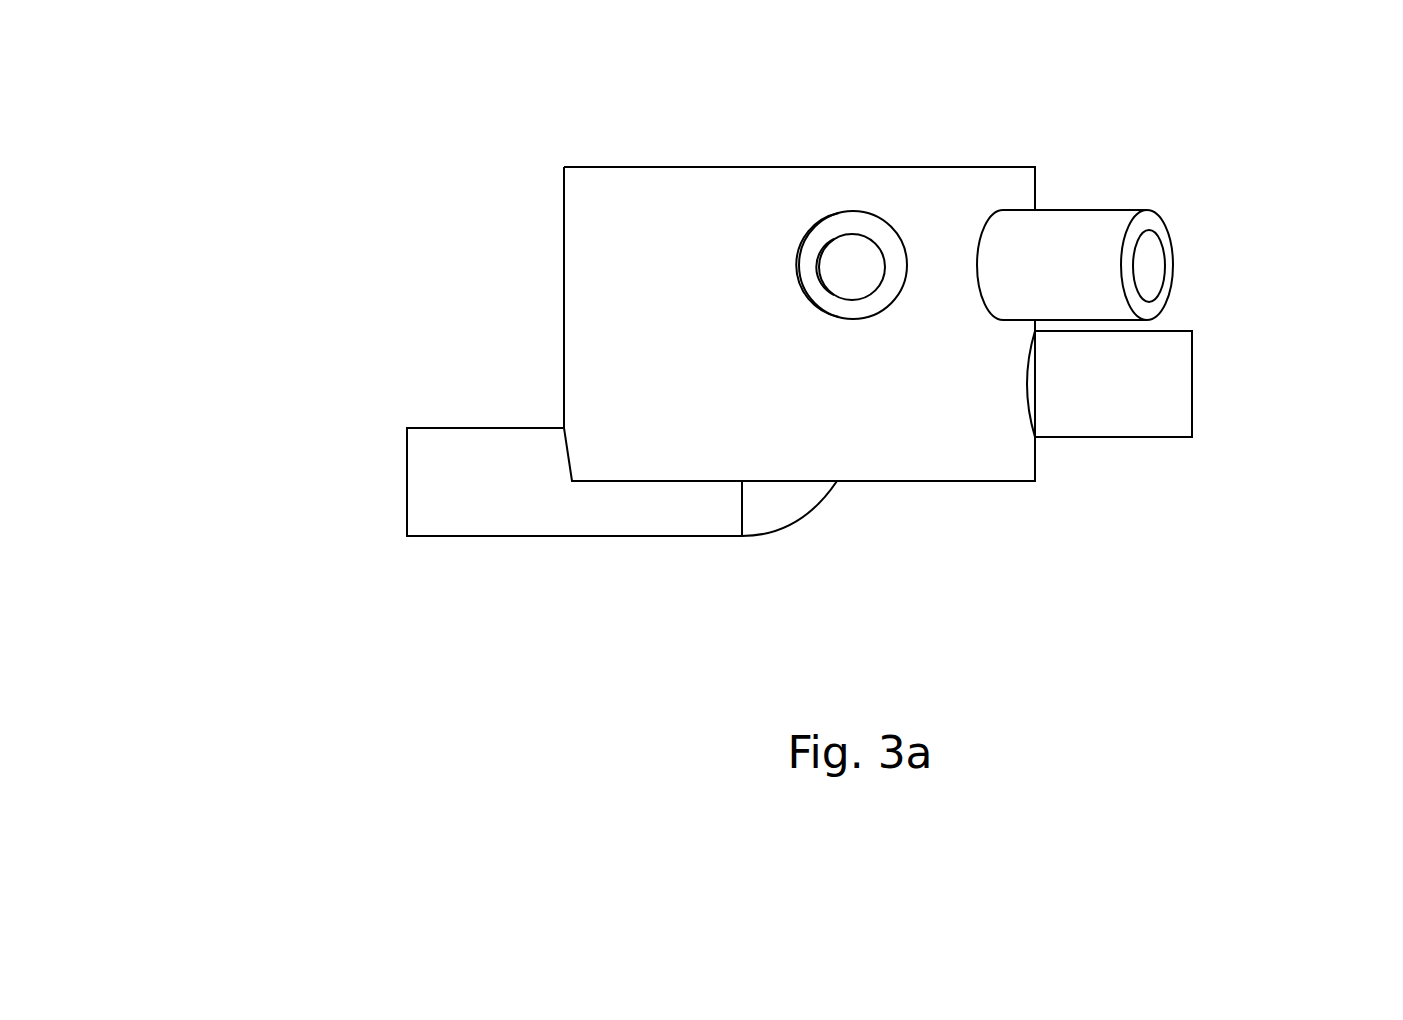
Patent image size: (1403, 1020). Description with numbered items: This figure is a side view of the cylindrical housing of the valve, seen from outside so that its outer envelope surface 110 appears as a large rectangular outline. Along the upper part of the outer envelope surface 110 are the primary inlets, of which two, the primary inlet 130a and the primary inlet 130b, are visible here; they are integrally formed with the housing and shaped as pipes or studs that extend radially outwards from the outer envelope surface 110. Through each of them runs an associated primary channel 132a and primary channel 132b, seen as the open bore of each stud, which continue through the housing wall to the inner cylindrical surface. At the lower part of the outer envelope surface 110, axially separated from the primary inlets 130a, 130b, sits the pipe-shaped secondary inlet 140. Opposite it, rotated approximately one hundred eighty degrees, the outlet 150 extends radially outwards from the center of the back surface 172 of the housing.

The outer envelope surface 110 is at (591, 301).
The primary inlet 130a is at (1044, 234).
The primary inlet 130b is at (898, 243).
The primary channel 132a is at (1155, 265).
The primary channel 132b is at (833, 260).
The secondary inlet 140 is at (1172, 386).
The outlet 150 is at (377, 486).
The back surface 172 is at (952, 503).